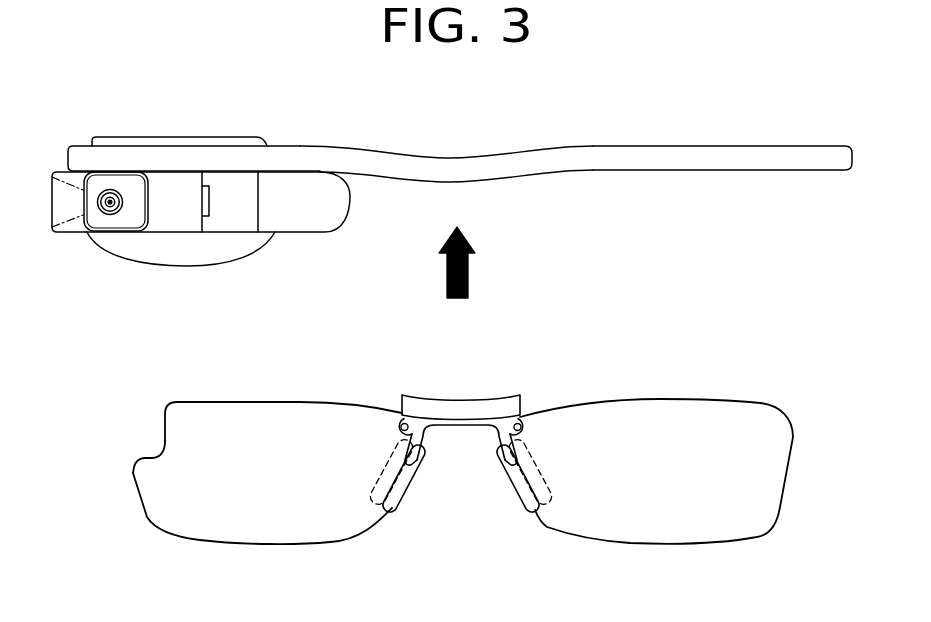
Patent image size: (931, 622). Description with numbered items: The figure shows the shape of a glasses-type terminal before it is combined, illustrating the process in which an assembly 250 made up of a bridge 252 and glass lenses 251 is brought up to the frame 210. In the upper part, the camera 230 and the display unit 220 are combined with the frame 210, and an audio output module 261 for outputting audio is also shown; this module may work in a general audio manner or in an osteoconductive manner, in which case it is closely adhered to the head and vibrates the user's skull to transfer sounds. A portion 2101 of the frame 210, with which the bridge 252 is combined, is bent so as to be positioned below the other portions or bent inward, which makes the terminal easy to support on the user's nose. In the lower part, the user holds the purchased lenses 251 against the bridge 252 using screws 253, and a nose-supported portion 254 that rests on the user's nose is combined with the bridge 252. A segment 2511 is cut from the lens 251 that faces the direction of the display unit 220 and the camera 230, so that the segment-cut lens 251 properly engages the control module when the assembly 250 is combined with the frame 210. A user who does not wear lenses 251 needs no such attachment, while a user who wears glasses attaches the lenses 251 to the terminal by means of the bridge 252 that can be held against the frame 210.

The frame 210 is at (527, 165).
The portion of the frame 2101 is at (475, 165).
The display unit 220 is at (327, 213).
The camera 230 is at (93, 228).
The audio output module 261 is at (158, 245).
The assembly 250 is at (466, 385).
The glass lenses 251 is at (772, 428).
The segment 2511 is at (163, 445).
The bridge 252 is at (515, 407).
The screws 253 is at (402, 423).
The nose-supported portion 254 is at (405, 485).